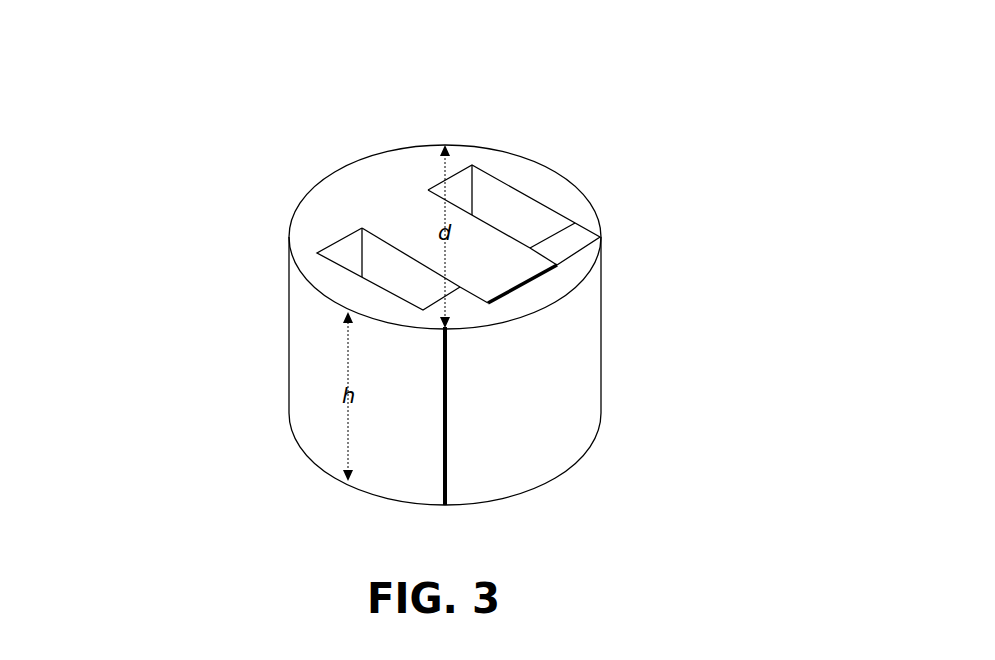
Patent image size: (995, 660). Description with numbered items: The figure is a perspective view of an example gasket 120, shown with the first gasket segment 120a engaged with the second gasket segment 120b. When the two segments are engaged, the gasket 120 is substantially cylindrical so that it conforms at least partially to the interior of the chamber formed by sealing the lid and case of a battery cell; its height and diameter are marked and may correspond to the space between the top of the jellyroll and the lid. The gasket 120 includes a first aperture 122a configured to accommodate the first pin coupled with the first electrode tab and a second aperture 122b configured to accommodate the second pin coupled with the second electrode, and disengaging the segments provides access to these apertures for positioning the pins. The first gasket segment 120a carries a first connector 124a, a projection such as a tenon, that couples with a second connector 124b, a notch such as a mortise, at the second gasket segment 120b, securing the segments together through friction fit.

The gasket 120 is at (593, 108).
The first gasket segment 120a is at (383, 203).
The second gasket segment 120b is at (566, 390).
The first aperture 122a is at (345, 250).
The second aperture 122b is at (507, 200).
The first connector 124a is at (507, 267).
The second connector 124b is at (540, 283).